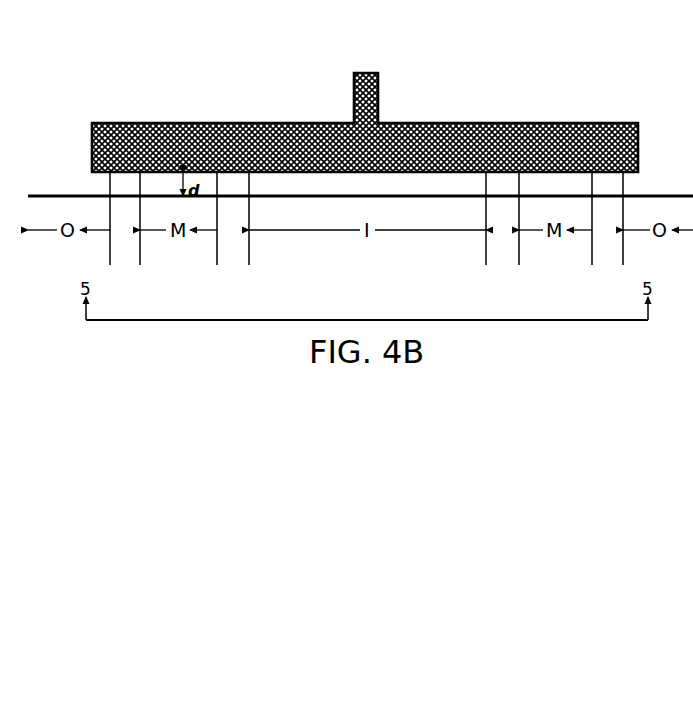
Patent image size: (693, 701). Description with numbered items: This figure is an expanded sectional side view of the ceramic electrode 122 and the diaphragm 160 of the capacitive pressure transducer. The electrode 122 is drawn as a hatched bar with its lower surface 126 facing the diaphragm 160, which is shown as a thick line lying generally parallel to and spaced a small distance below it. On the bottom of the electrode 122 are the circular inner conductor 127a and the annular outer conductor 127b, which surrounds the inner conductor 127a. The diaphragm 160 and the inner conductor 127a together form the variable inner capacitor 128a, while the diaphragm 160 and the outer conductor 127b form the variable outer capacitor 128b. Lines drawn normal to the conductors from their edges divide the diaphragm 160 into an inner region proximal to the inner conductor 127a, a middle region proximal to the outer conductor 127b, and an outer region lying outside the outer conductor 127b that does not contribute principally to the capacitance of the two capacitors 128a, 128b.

The ceramic electrode 122 is at (236, 112).
The substrate surface 126 is at (472, 163).
The inner conductor 127a is at (336, 171).
The outer conductor 127b is at (165, 171).
The variable inner capacitor 128a is at (297, 183).
The variable outer capacitor 128b is at (536, 183).
The diaphragm 160 is at (428, 197).